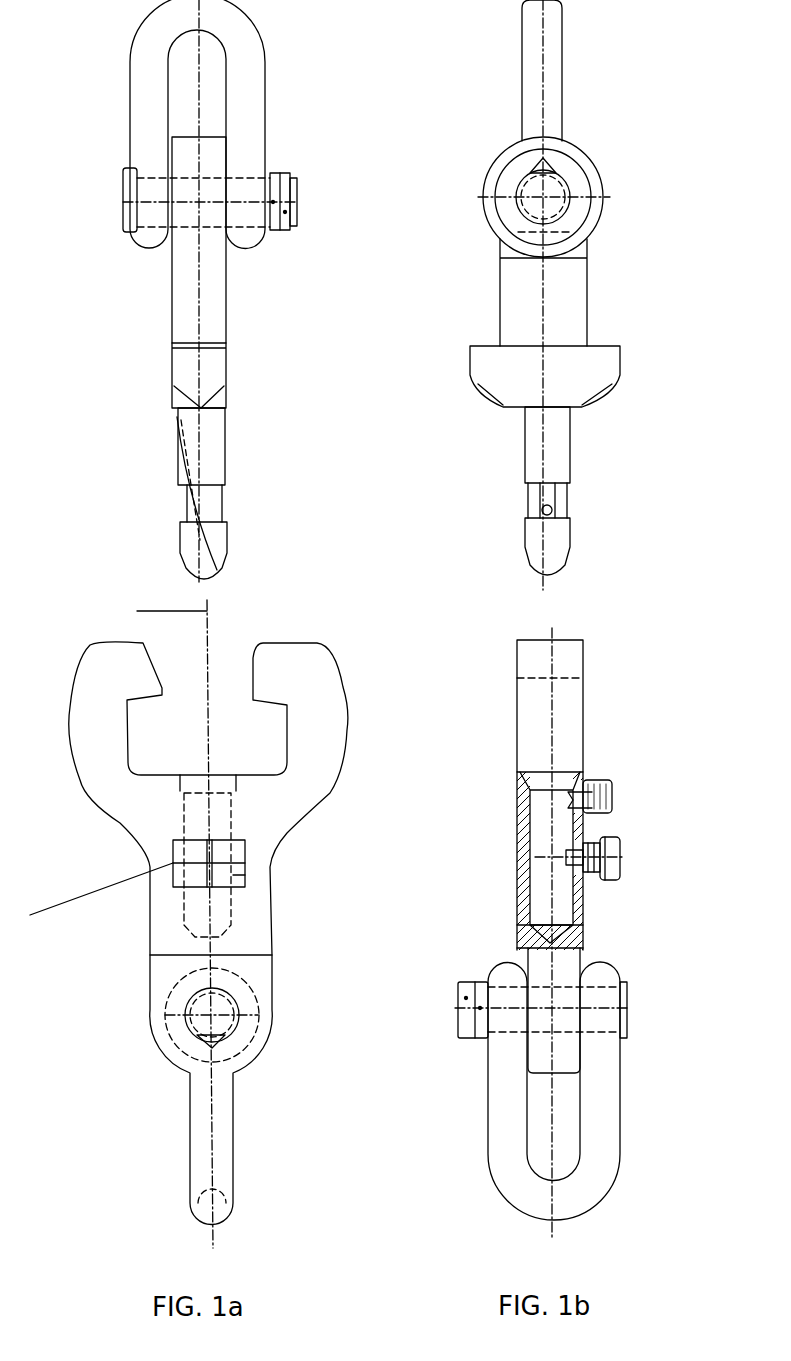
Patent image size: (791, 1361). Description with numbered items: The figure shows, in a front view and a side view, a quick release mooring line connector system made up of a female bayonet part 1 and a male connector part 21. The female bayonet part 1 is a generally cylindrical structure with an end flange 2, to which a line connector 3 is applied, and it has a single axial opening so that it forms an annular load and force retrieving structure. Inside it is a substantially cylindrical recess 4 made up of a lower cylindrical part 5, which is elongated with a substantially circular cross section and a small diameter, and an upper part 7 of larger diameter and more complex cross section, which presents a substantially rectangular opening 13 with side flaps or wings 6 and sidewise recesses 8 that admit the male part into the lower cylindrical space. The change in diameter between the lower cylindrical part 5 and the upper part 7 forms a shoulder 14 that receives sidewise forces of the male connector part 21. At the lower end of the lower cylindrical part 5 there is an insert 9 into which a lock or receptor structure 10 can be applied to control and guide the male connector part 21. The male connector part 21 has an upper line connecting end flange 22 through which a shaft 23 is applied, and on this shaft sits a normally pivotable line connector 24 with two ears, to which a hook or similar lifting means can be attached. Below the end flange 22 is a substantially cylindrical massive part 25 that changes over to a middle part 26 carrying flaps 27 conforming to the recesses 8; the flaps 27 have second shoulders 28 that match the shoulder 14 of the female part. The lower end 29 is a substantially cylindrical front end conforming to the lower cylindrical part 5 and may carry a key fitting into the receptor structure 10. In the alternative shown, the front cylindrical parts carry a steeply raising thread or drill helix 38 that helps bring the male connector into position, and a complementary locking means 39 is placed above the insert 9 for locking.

In FIG. 1a, the female bayonet part 1 is at (379, 730).
In FIG. 1b, the female bayonet part 1 is at (512, 707).
In FIG. 1a, the end flange 2 is at (265, 1025).
In FIG. 1b, the end flange 2 is at (537, 977).
In FIG. 1a, the line connector 3 is at (223, 1197).
In FIG. 1b, the line connector 3 is at (488, 1157).
In FIG. 1a, the cylindrical recess 4 is at (175, 748).
In FIG. 1a, the lower cylindrical part 5 is at (225, 897).
In FIG. 1b, the lower cylindrical part 5 is at (537, 873).
In FIG. 1a, the side flaps or wings 6 is at (318, 662).
In FIG. 1b, the upper part 7 is at (568, 722).
In FIG. 1a, the recesses 8 is at (133, 730).
In FIG. 1a, the insert 9 is at (233, 875).
In FIG. 1b, the insert 9 is at (620, 865).
In FIG. 1b, the receptor structure 10 is at (585, 930).
In FIG. 1a, the rectangular opening 13 is at (247, 651).
In FIG. 1a, the shoulder 14 is at (133, 820).
In FIG. 1a, the male connector part 21 is at (262, 319).
In FIG. 1b, the male connector part 21 is at (485, 294).
In FIG. 1a, the upper line connecting end flange 22 is at (197, 173).
In FIG. 1b, the upper line connecting end flange 22 is at (593, 153).
In FIG. 1a, the shaft 23 is at (298, 192).
In FIG. 1b, the shaft 23 is at (570, 187).
In FIG. 1a, the line connector 24 is at (145, 35).
In FIG. 1b, the line connector 24 is at (560, 12).
In FIG. 1a, the cylindrical massive part 25 is at (223, 467).
In FIG. 1b, the cylindrical massive part 25 is at (567, 475).
In FIG. 1a, the middle part 26 is at (223, 367).
In FIG. 1b, the flaps 27 is at (612, 360).
In FIG. 1b, the second shoulders 28 is at (597, 398).
In FIG. 1a, the lower end 29 is at (220, 535).
In FIG. 1b, the lower end 29 is at (560, 538).
In FIG. 1a, the steeply raising thread or drill helix 38 is at (190, 460).
In FIG. 1b, the complementary locking means 39 is at (615, 792).